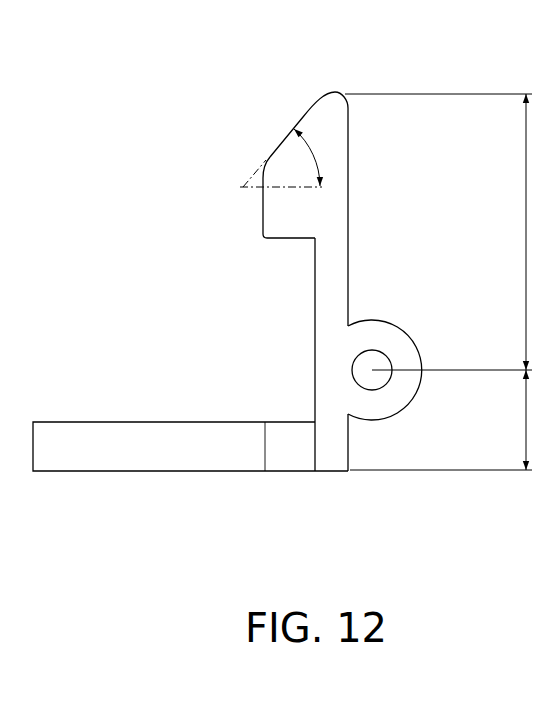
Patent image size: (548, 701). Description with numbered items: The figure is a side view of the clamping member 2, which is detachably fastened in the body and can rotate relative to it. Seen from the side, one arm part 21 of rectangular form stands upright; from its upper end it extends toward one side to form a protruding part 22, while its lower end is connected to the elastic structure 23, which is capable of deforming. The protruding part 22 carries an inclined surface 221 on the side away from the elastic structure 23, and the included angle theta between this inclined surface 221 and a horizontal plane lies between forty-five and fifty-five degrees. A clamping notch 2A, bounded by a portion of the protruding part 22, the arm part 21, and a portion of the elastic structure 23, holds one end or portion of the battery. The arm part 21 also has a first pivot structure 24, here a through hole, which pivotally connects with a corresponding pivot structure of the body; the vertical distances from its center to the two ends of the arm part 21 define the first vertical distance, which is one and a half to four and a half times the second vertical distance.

The clamping member 2 is at (57, 43).
The arm part 21 is at (337, 287).
The protruding part 22 is at (298, 205).
The inclined surface 221 is at (302, 117).
The elastic structure 23 is at (87, 445).
The first pivot structure 24 is at (362, 362).
The clamping notch 2A is at (294, 287).